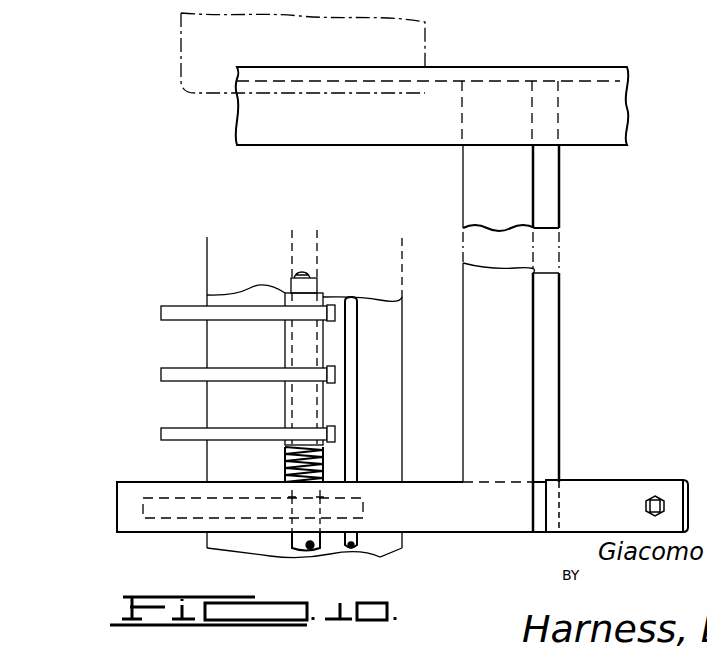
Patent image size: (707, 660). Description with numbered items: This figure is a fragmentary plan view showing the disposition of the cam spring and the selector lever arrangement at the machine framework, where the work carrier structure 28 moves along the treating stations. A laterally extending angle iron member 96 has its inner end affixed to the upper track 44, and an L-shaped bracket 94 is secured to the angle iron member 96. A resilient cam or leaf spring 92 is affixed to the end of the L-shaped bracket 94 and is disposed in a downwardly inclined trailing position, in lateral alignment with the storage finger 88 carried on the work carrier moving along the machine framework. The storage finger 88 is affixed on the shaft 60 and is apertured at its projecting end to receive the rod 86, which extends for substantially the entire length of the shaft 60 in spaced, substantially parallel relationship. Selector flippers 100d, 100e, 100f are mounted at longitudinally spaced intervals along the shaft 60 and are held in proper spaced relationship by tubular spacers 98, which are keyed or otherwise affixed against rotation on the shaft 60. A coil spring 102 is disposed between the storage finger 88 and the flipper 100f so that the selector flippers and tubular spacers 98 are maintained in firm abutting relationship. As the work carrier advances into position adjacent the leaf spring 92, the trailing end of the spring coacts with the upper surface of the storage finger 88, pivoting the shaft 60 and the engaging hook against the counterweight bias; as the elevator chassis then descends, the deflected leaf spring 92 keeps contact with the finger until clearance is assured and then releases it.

The upper track 44 is at (605, 107).
The angle iron member 96 is at (522, 302).
The housing 28 is at (393, 420).
The rod 86 is at (355, 340).
The tubular spacers 98 is at (285, 294).
The selector flipper 100d is at (160, 312).
The selector flipper 100e is at (160, 375).
The selector flipper 100f is at (160, 436).
The coil spring 102 is at (285, 462).
The leaf spring 92 is at (127, 518).
The storage finger 88 is at (153, 500).
The shaft 60 is at (300, 552).
The L-shaped bracket 94 is at (603, 500).